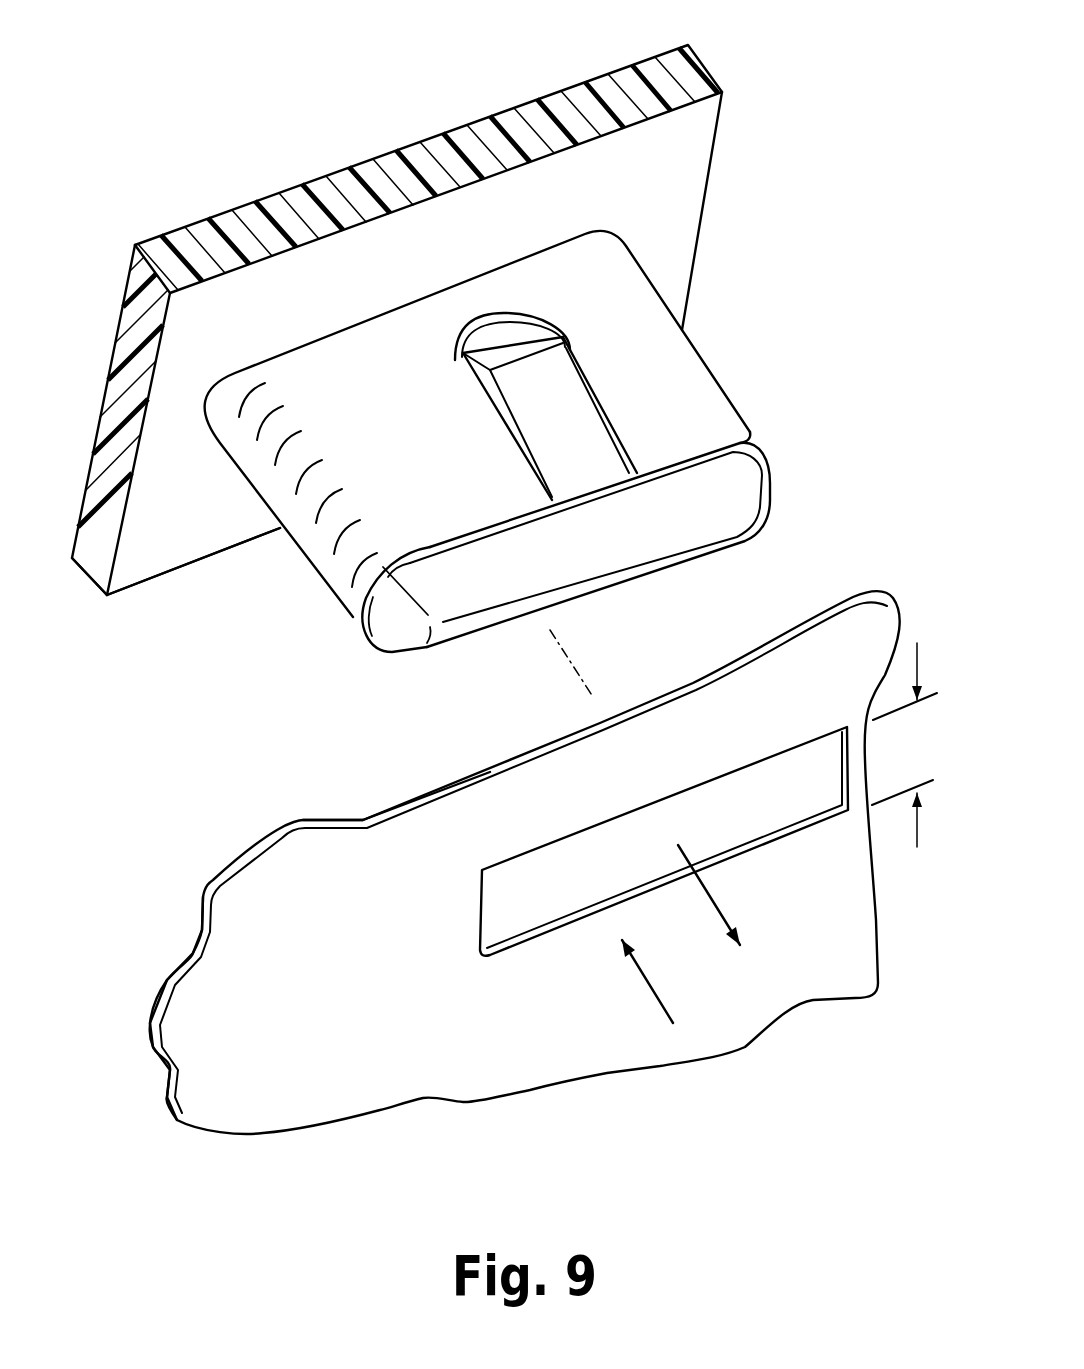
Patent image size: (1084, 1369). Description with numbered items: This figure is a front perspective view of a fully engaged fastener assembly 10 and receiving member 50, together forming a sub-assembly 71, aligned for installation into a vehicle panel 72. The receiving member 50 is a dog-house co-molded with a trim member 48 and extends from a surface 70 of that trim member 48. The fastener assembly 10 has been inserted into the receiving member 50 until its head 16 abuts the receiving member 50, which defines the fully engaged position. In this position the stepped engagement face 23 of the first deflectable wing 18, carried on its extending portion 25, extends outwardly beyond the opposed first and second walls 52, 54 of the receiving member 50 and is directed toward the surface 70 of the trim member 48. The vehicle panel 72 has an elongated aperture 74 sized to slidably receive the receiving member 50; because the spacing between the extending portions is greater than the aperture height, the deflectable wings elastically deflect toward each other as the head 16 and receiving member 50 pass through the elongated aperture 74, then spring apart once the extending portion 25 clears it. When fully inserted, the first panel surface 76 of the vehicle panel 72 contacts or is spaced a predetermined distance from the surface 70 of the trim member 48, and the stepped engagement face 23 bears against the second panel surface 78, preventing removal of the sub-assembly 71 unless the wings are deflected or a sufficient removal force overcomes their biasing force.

The fastener assembly 10 is at (541, 490).
The head 16 is at (740, 497).
The first deflectable wing 18 is at (574, 445).
The stepped engagement face 23 is at (530, 340).
The extending portion 25 is at (540, 360).
The trim member 48 is at (697, 73).
The receiving member 50 is at (255, 577).
The first wall 52 is at (702, 405).
The second wall 54 is at (342, 602).
The surface 70 is at (686, 153).
The sub-assembly 71 is at (122, 663).
The vehicle panel 72 is at (243, 917).
The elongated aperture 74 is at (549, 907).
The first panel surface 76 is at (360, 815).
The second panel surface 78 is at (185, 1033).